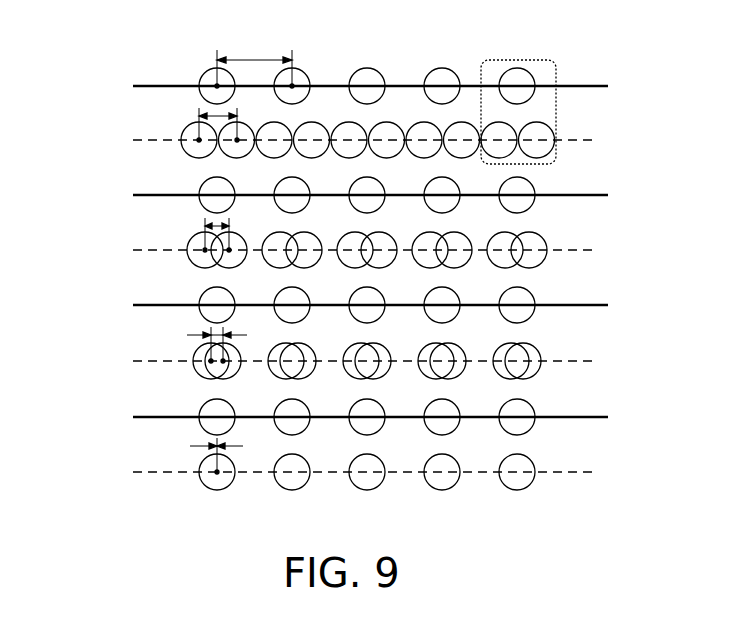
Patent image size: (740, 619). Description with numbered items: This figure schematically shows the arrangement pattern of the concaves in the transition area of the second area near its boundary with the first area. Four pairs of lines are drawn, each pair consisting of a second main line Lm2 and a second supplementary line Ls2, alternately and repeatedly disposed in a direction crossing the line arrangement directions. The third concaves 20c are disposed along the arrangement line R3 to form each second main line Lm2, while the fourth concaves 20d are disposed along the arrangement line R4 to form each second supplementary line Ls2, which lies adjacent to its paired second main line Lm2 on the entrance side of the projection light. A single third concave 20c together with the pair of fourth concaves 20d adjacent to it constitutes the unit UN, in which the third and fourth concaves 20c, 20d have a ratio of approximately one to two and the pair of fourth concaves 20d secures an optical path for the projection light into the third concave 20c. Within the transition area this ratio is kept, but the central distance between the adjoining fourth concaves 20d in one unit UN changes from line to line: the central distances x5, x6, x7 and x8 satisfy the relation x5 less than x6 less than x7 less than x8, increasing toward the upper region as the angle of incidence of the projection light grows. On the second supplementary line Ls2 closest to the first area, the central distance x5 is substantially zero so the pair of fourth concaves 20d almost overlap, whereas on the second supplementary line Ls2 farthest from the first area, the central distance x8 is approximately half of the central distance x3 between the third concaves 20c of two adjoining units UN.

The third concave 20c is at (206, 72).
The fourth concave 20d is at (280, 124).
The arrangement line R3 is at (588, 86).
The arrangement line R4 is at (600, 140).
The unit UN is at (521, 75).
The second main line Lm2 is at (98, 82).
The second supplementary line Ls2 is at (98, 137).
The central distance of the third concaves x3 is at (252, 58).
The central distance x8 is at (208, 115).
The central distance x7 is at (210, 225).
The central distance x6 is at (212, 335).
The central distance x5 is at (213, 446).